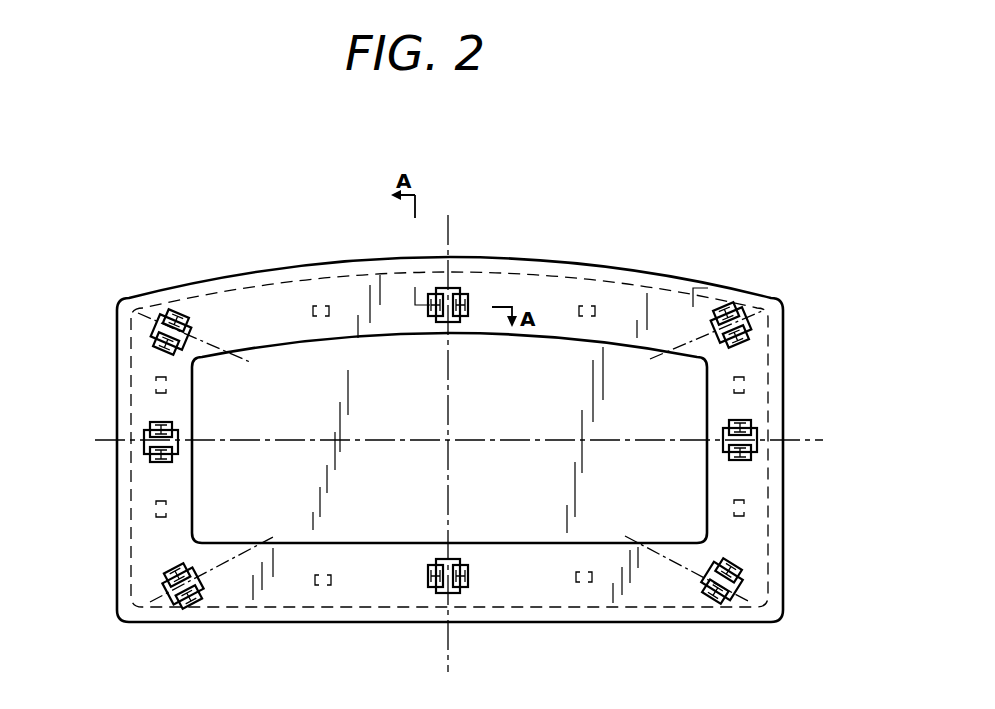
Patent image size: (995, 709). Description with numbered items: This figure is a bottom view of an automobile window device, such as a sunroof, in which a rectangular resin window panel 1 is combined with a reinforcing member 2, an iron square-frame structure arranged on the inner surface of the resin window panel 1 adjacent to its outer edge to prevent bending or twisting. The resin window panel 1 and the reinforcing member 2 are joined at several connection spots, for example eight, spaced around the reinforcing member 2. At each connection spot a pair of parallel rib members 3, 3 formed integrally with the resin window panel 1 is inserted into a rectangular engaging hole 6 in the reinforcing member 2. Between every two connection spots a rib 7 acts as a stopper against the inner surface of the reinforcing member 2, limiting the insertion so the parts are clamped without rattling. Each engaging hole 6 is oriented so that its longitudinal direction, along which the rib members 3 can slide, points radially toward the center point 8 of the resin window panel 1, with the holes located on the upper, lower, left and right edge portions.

The resin window panel 1 is at (318, 413).
The reinforcing member 2 is at (244, 332).
The rib member 3 is at (430, 297).
The engaging hole 6 is at (502, 394).
The rib 7 is at (320, 300).
The center point 8 is at (449, 440).